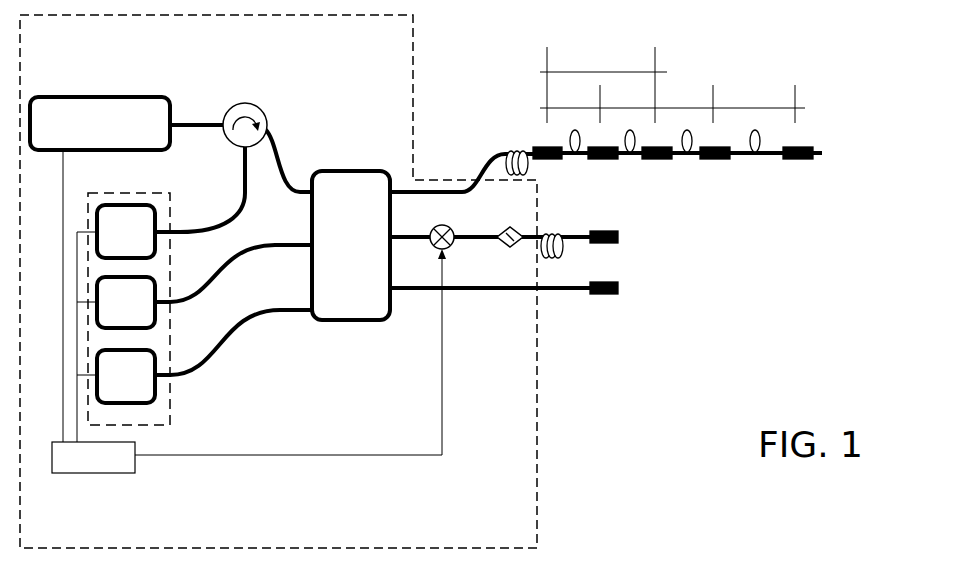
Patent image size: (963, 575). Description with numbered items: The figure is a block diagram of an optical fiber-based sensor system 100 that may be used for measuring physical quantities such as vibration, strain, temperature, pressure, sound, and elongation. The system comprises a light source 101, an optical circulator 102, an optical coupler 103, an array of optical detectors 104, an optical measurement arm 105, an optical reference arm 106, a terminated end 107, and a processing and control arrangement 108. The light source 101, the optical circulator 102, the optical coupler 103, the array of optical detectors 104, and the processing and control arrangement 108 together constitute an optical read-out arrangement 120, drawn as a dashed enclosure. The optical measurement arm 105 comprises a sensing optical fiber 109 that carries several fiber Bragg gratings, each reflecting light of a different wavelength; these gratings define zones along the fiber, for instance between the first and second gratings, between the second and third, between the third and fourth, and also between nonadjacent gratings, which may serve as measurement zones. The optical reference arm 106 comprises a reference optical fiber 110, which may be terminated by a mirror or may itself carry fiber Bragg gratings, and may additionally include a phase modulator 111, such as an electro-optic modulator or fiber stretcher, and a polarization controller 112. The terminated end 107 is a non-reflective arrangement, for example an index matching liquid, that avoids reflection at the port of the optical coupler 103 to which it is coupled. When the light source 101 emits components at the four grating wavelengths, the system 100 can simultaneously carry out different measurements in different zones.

The optical fiber-based sensor system 100 is at (672, 455).
The light source 101 is at (100, 88).
The optical circulator 102 is at (254, 87).
The optical coupler 103 is at (351, 213).
The array of optical detectors 104 is at (173, 309).
The optical measurement arm 105 is at (700, 132).
The optical reference arm 106 is at (675, 249).
The terminated end 107 is at (675, 301).
The processing and control arrangement 108 is at (93, 497).
The sensing optical fiber 109 is at (504, 127).
The reference optical fiber 110 is at (582, 217).
The phase modulator 111 is at (473, 220).
The polarization controller 112 is at (487, 255).
The optical read-out arrangement 120 is at (328, 281).